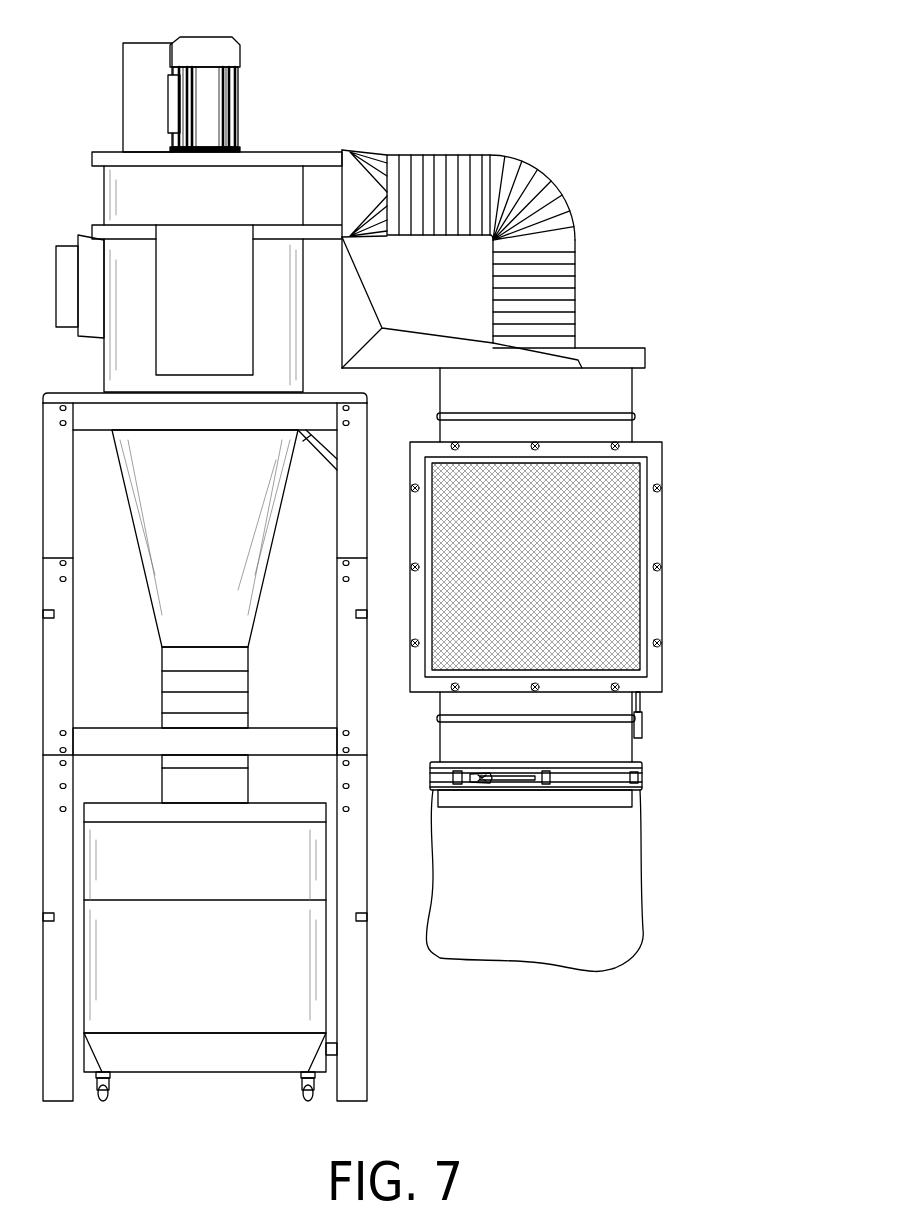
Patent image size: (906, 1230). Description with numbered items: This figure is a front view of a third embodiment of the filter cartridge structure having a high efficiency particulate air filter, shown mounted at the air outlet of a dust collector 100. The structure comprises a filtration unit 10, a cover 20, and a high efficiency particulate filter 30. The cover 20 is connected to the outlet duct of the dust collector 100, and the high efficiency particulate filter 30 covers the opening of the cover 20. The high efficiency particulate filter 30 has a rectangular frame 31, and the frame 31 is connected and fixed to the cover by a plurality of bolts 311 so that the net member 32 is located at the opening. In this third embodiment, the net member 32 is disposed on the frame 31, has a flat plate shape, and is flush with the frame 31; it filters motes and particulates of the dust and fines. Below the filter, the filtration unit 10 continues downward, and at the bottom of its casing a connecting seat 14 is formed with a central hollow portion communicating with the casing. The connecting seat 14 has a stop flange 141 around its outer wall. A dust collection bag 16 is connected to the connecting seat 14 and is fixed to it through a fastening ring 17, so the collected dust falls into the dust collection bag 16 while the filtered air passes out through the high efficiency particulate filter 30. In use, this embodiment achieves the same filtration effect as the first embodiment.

The dust collector 100 is at (297, 144).
The cover 20 is at (640, 388).
The high efficiency particulate filter 30 is at (670, 458).
The frame 31 is at (655, 523).
The bolts 311 is at (663, 565).
The net member 32 is at (622, 603).
The filtration unit 10 is at (580, 800).
The connecting seat 14 is at (612, 770).
The stop flange 141 is at (640, 768).
The fastening ring 17 is at (640, 780).
The dust collection bag 16 is at (618, 910).